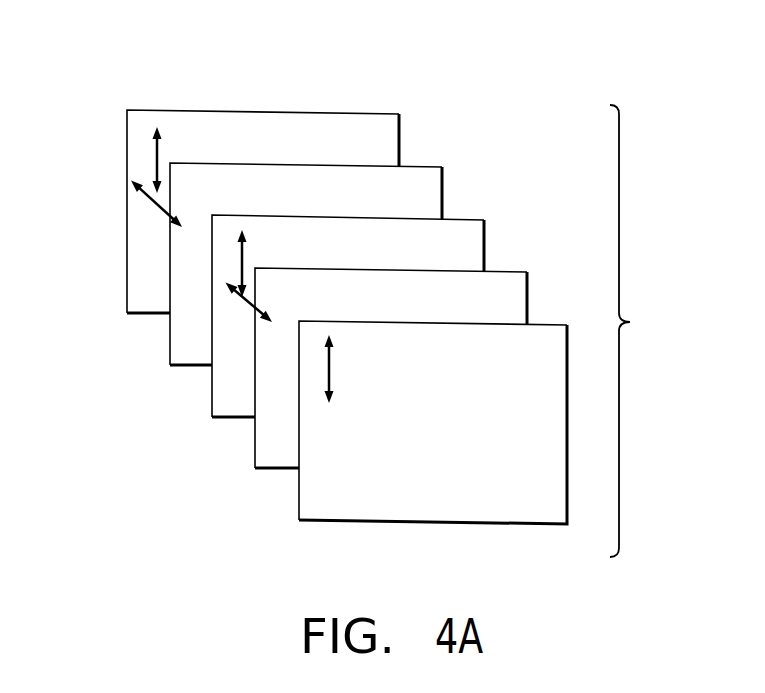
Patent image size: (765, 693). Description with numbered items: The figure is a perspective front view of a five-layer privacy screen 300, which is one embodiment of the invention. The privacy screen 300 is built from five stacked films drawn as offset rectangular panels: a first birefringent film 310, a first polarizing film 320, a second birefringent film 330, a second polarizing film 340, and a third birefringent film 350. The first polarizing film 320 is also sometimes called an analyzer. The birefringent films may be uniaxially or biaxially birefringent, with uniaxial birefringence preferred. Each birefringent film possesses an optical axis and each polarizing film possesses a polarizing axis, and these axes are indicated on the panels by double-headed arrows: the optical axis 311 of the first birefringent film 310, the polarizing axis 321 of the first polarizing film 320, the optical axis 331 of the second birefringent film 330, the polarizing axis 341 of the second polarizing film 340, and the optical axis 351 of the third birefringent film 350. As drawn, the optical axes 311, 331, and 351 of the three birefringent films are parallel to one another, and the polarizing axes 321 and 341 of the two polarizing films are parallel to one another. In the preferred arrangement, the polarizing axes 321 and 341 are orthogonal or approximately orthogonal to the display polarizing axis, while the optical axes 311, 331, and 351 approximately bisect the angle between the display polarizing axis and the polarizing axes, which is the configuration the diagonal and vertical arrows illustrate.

The privacy screen 300 is at (644, 331).
The first birefringent film 310 is at (127, 213).
The optical axis of the first birefringent film 311 is at (154, 160).
The first polarizing film 320 is at (170, 351).
The polarizing axis of the first polarizing film 321 is at (208, 198).
The second birefringent film 330 is at (212, 403).
The optical axis of the second birefringent film 331 is at (239, 268).
The second polarizing film 340 is at (255, 455).
The polarizing axis of the second polarizing film 341 is at (295, 303).
The third birefringent film 350 is at (299, 507).
The optical axis of the third birefringent film 351 is at (329, 368).